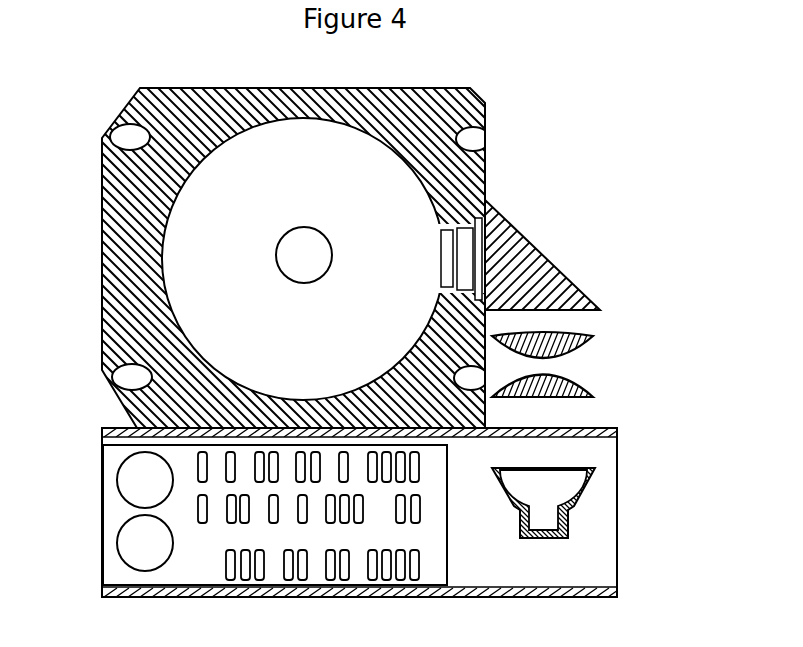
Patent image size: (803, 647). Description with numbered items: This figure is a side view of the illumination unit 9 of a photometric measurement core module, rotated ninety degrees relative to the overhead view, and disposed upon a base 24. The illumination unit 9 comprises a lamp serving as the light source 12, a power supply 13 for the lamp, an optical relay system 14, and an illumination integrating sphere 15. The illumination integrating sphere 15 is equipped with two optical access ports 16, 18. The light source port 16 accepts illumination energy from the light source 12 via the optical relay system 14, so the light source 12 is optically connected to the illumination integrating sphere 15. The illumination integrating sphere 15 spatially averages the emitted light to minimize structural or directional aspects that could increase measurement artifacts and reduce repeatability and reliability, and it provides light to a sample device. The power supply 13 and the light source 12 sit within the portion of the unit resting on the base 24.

The illumination unit 9 is at (400, 238).
The illumination integrating sphere 15 is at (383, 90).
The optical access port 18 is at (304, 230).
The light source port 16 is at (482, 200).
The optical relay system 14 is at (629, 354).
The base 24 is at (623, 548).
The power supply 13 is at (445, 558).
The light source 12 is at (588, 488).